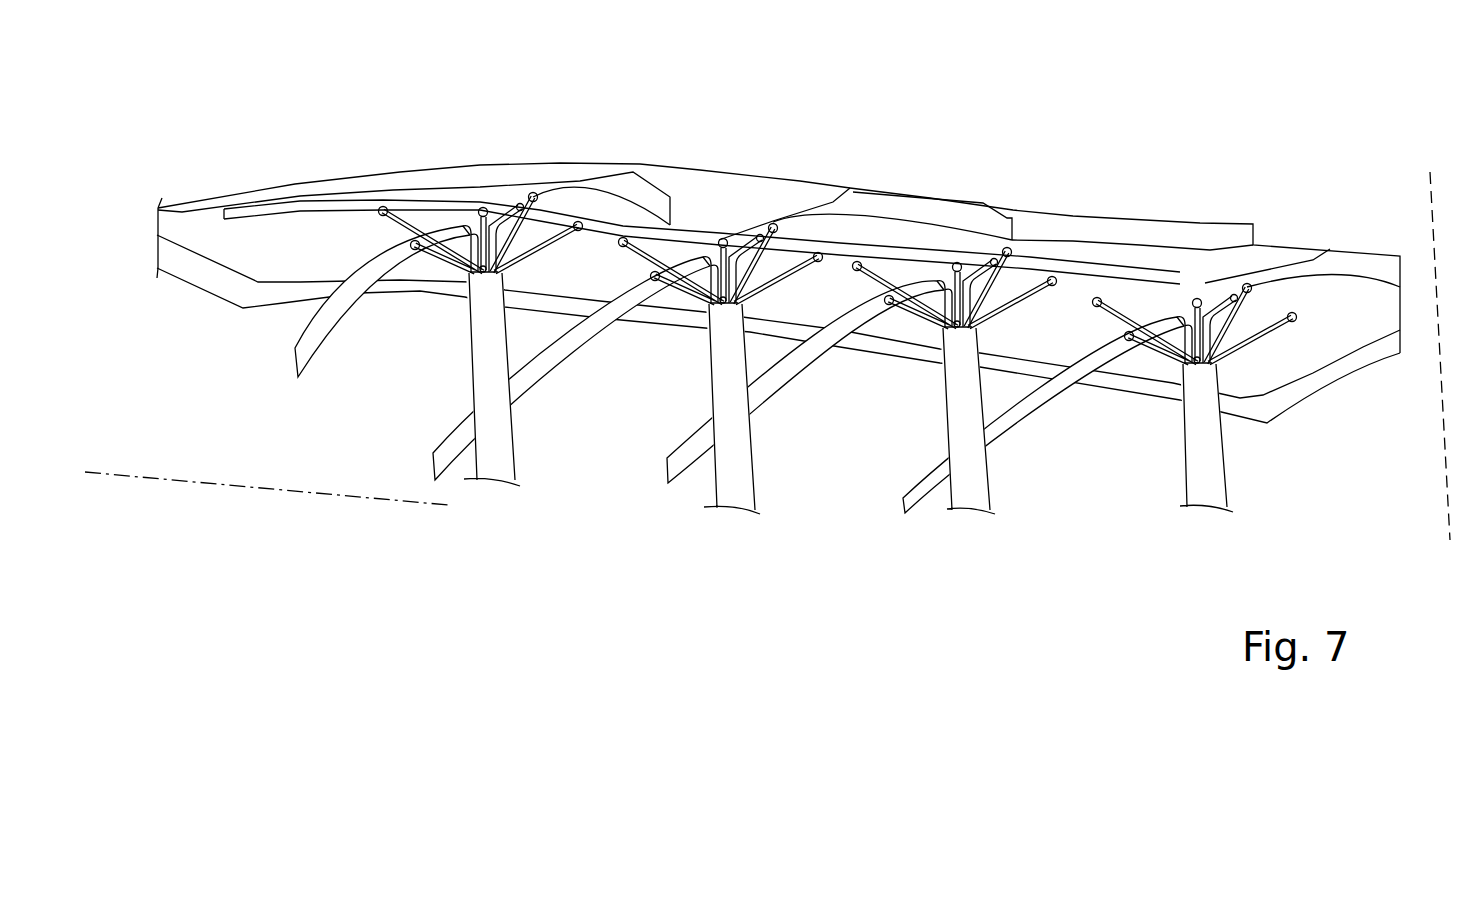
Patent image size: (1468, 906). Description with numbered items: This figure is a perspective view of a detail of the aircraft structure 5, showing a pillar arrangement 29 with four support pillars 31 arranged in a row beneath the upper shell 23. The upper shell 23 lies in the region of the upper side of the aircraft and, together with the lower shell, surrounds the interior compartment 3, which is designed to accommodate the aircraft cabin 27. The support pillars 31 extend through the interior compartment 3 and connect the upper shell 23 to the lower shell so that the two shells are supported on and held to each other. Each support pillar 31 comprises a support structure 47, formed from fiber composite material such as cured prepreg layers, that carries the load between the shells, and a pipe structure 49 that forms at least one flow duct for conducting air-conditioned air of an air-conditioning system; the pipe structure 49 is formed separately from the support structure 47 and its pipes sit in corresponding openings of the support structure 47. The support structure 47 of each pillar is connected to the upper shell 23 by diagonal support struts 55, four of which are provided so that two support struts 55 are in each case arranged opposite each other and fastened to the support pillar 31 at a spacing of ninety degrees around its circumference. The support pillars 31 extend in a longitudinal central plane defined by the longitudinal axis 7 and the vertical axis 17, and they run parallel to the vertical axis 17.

The aircraft structure 5 is at (222, 125).
The upper shell 23 is at (718, 202).
The support struts 55 is at (1197, 300).
The pipe structure 49 is at (740, 272).
The support structure 47 is at (965, 441).
The pillar arrangement 29 is at (727, 480).
The support pillars 31 is at (612, 418).
The interior compartment 3 is at (778, 362).
The aircraft cabin 27 is at (1137, 488).
The vertical axis 17 is at (1433, 218).
The longitudinal axis 7 is at (217, 483).